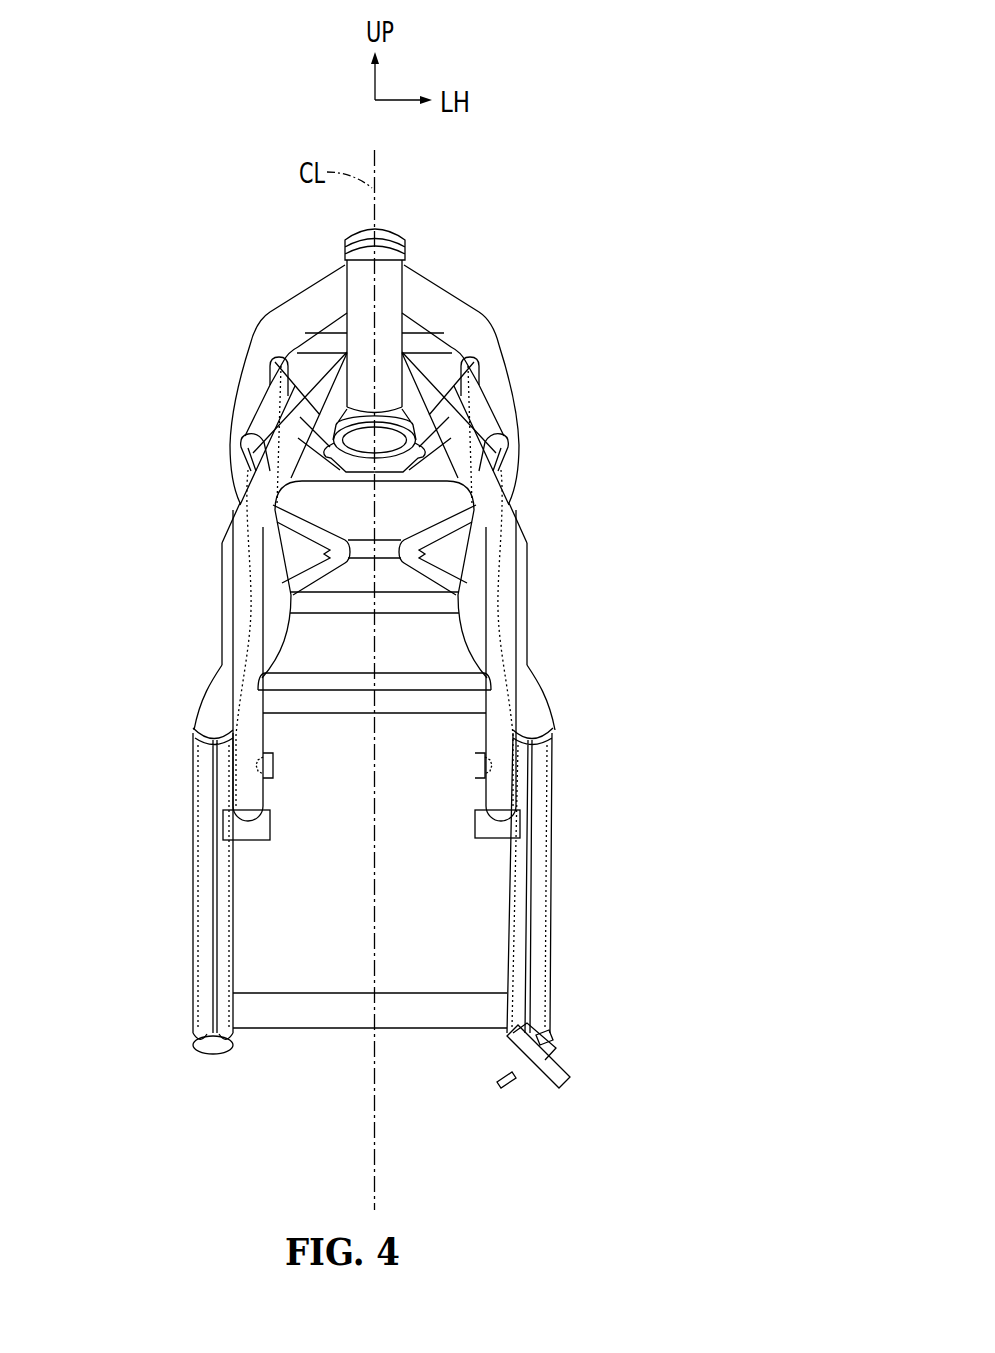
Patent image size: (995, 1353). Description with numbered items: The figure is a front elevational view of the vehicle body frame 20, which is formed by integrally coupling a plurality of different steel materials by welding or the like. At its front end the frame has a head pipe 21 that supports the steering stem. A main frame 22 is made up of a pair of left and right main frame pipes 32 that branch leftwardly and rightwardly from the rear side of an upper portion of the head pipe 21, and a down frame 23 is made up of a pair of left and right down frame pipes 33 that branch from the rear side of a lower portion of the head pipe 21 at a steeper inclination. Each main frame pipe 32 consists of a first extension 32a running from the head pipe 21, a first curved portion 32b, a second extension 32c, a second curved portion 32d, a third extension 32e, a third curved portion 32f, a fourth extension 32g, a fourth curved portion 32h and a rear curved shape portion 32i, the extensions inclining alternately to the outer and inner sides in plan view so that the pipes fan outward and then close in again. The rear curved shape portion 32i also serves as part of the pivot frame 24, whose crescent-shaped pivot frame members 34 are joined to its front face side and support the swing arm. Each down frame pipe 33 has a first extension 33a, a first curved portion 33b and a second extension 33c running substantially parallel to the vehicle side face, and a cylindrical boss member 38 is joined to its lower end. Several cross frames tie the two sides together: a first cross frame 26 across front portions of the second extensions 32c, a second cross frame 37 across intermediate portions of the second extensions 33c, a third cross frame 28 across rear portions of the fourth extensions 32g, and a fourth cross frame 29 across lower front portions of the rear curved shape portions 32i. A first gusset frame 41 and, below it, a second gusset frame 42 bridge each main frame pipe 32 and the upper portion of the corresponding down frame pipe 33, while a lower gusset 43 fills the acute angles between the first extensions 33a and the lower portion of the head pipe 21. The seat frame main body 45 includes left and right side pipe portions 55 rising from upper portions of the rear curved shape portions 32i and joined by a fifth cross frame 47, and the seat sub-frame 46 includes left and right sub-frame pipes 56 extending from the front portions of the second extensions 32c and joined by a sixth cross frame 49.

The vehicle body frame 20 is at (628, 197).
The head pipe 21 is at (387, 312).
The main frame 22 is at (371, 614).
The down frame 23 is at (373, 566).
The pivot frame 24 is at (381, 910).
The first cross frame 26 is at (382, 276).
The third cross frame 28 is at (374, 739).
The fourth cross frame 29 is at (370, 976).
The main frame pipe 32 is at (366, 614).
The first extension 32a is at (393, 274).
The first curved portion 32b is at (391, 299).
The second extension 32c is at (386, 368).
The second curved portion 32d is at (374, 463).
The third extension 32e is at (378, 597).
The third curved portion 32f is at (373, 594).
The fourth extension 32g is at (373, 697).
The fourth curved portion 32h is at (373, 737).
The rear curved shape portion 32i is at (370, 886).
The down frame pipe 33 is at (370, 566).
The first extension 33a is at (388, 408).
The first curved portion 33b is at (375, 534).
The second extension 33c is at (373, 698).
The pivot frame member 34 is at (391, 910).
The second cross frame 37 is at (374, 656).
The cylindrical boss member 38 is at (372, 838).
The first gusset frame 41 is at (379, 375).
The second gusset frame 42 is at (374, 443).
The lower gusset 43 is at (374, 489).
The seat frame main body 45 is at (374, 622).
The seat sub-frame 46 is at (374, 765).
The fifth cross frame 47 is at (374, 631).
The sixth cross frame 49 is at (374, 542).
The side pipe portion 55 is at (373, 622).
The sub-frame pipe 56 is at (374, 694).